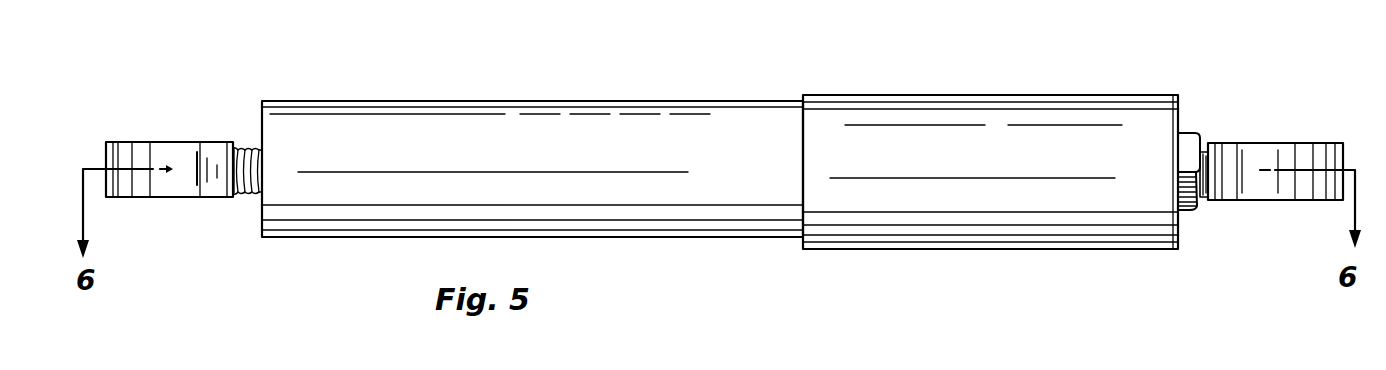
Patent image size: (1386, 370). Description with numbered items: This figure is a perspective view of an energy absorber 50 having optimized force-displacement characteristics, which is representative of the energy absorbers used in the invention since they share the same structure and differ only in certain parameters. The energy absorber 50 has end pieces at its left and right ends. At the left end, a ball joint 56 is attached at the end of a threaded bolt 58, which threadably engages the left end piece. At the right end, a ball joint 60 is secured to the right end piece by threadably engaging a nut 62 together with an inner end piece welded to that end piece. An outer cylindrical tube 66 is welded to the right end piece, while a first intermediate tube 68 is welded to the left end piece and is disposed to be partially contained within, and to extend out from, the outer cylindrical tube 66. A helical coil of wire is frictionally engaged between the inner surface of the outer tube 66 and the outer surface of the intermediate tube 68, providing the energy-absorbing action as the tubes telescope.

The energy absorber 50 is at (777, 103).
The ball joint 56 is at (163, 190).
The threaded bolt 58 is at (250, 147).
The ball joint 60 is at (1302, 201).
The nut 62 is at (1197, 207).
The outer cylindrical tube 66 is at (957, 118).
The first intermediate tube 68 is at (530, 120).